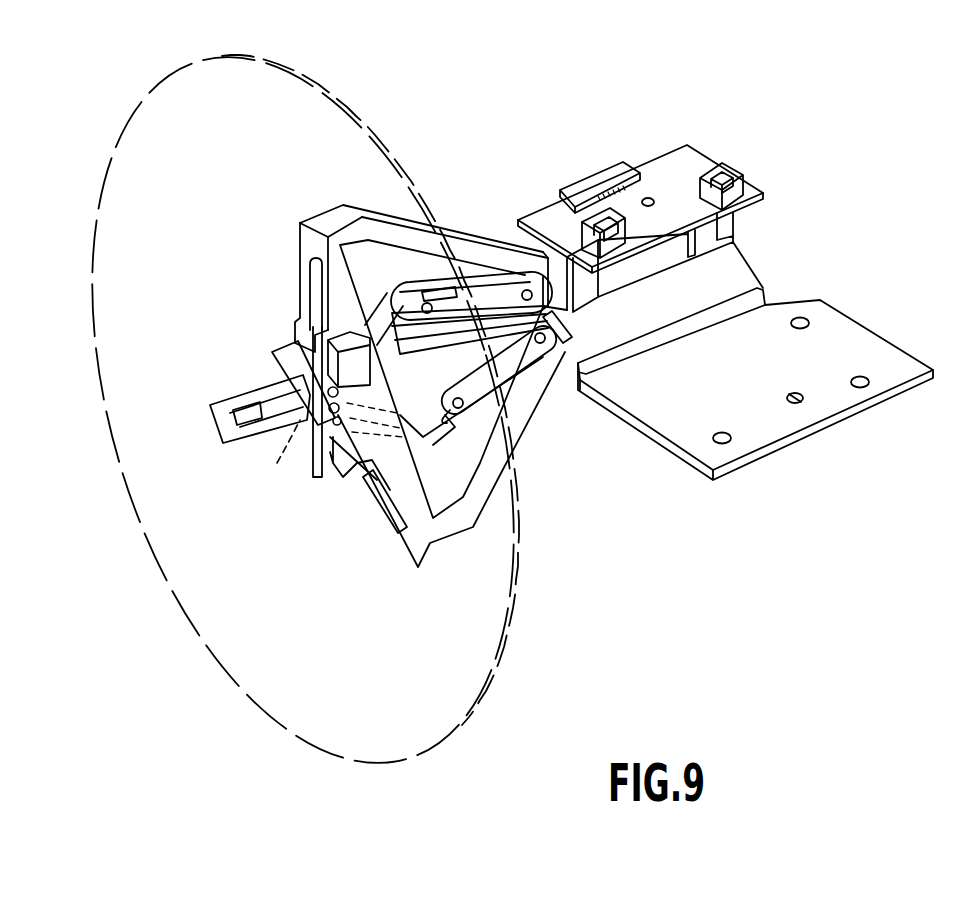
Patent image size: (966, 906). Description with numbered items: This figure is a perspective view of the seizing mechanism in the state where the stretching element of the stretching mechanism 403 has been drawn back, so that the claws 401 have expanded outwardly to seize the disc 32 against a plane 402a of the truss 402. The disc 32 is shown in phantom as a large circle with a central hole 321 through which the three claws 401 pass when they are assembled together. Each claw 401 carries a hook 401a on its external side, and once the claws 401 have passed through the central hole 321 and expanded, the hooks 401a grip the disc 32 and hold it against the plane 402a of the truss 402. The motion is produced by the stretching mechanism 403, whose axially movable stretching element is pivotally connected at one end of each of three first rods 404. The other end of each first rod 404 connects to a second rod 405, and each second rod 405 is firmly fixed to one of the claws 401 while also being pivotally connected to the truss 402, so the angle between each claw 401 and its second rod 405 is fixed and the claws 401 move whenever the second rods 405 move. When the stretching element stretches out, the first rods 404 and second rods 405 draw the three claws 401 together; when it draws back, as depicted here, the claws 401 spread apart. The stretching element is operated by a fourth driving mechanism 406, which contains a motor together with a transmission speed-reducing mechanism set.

The disc 32 is at (415, 722).
The central hole 321 is at (297, 437).
The claw 401 is at (318, 478).
The hook 401a is at (278, 340).
The truss 402 is at (440, 423).
The plane 402a is at (350, 480).
The stretching mechanism 403 is at (655, 144).
The first rod 404 is at (507, 375).
The second rod 405 is at (510, 373).
The fourth driving mechanism 406 is at (580, 183).